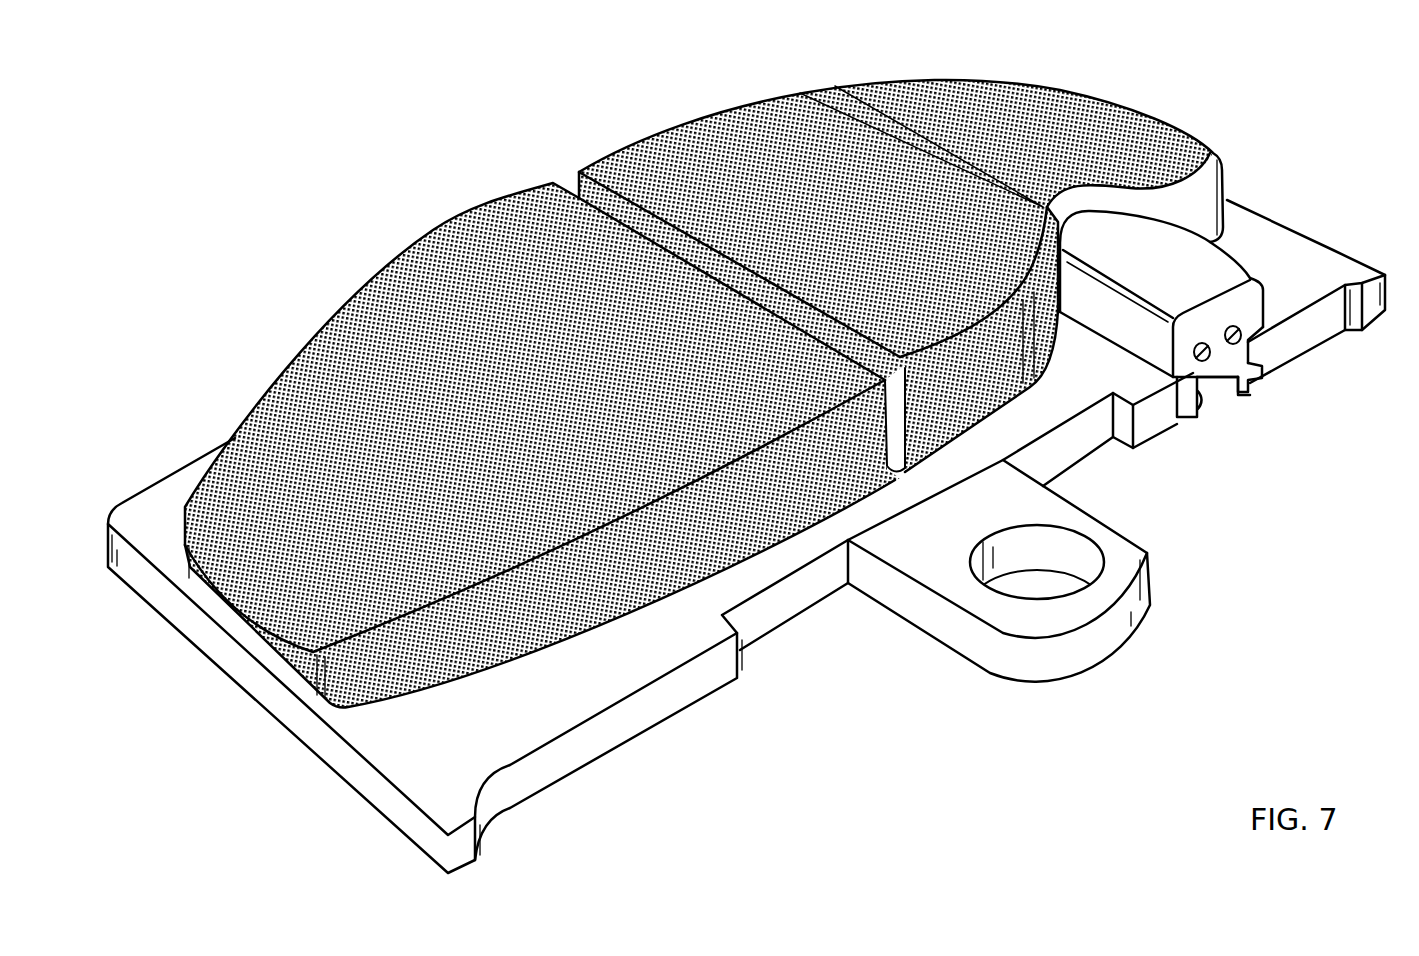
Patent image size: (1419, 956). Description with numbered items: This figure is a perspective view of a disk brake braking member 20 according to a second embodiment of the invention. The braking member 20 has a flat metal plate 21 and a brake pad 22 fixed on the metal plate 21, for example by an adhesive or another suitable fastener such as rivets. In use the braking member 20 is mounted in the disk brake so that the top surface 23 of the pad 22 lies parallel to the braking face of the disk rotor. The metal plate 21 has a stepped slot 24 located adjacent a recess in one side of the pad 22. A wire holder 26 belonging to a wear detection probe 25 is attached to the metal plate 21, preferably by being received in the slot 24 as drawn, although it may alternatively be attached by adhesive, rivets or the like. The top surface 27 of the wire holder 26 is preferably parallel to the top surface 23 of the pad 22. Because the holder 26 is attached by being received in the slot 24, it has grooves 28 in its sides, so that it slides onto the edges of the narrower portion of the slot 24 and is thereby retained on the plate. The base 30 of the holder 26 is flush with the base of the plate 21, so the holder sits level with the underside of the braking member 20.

The disk brake braking member 20 is at (336, 308).
The flat metal plate 21 is at (528, 740).
The brake pad 22 is at (655, 175).
The top surface of the pad 23 is at (467, 268).
The stepped slot 24 is at (1250, 352).
The wear detection probe 25 is at (1124, 338).
The wire holder 26 is at (1217, 399).
The top surface of the wire holder 27 is at (1207, 275).
The grooves 28 is at (1198, 412).
The base of the holder 30 is at (1254, 390).